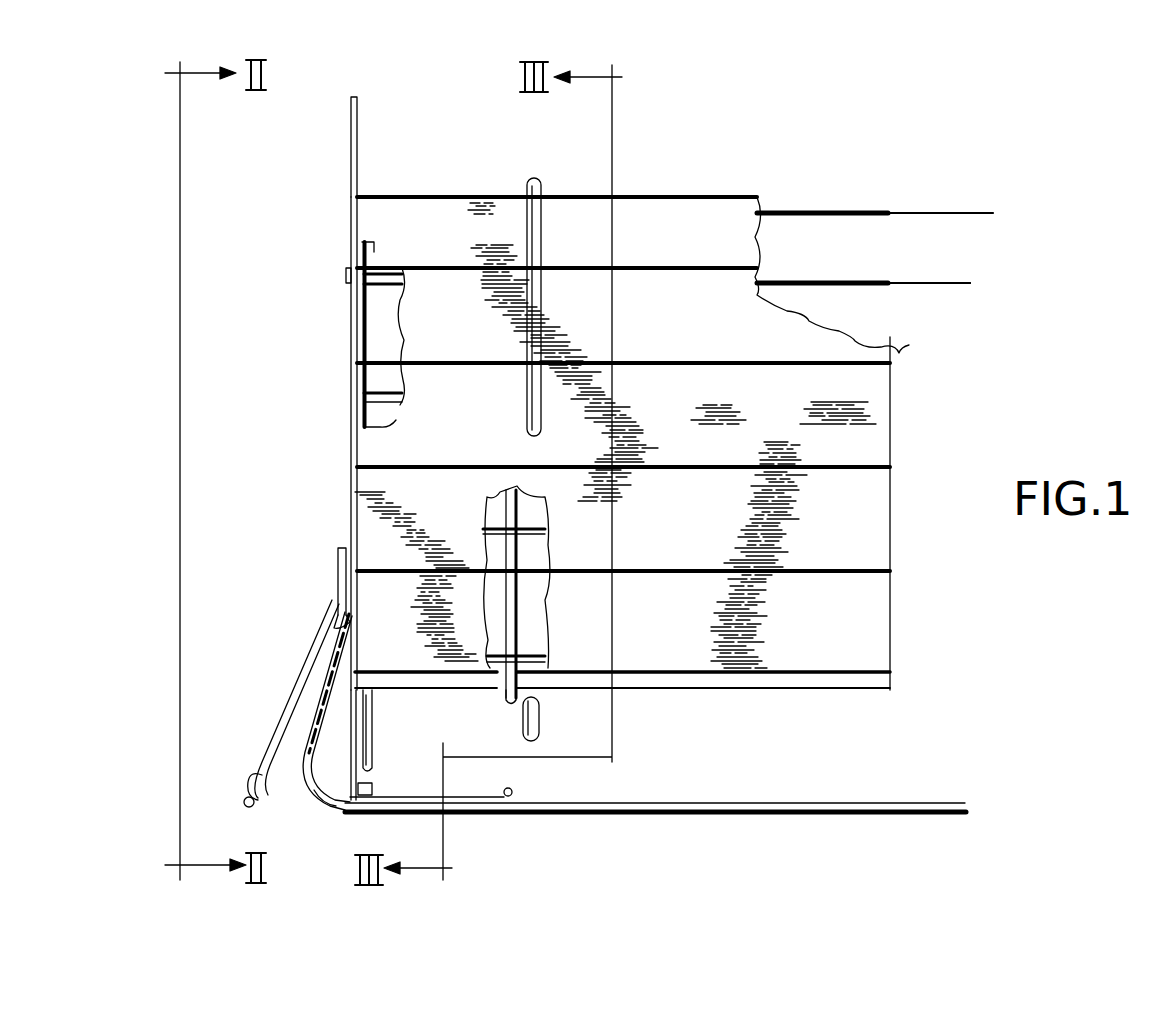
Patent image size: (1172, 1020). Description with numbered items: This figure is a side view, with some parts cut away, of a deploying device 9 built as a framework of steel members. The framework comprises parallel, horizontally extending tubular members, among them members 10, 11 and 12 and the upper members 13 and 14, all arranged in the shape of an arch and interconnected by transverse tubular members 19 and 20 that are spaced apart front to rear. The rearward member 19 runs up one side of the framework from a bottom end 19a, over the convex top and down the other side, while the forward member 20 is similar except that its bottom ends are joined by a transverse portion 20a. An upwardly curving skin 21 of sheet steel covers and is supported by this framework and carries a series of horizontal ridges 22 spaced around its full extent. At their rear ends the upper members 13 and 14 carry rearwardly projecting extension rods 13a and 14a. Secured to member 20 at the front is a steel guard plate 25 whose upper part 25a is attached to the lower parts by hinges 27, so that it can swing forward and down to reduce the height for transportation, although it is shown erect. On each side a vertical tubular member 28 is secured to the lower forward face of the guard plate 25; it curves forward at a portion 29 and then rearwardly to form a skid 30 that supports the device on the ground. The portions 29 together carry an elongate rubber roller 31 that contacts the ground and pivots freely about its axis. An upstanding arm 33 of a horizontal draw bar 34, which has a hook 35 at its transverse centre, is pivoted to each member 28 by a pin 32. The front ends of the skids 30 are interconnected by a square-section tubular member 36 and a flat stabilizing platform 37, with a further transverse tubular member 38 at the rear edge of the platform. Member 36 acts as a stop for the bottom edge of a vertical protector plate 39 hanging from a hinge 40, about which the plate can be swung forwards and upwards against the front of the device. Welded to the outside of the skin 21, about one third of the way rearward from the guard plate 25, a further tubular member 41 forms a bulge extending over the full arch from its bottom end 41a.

The deploying device 9 is at (642, 184).
The tubular member 10 is at (498, 648).
The tubular member 11 is at (490, 526).
The tubular member 12 is at (396, 390).
The upper tubular member 13 is at (830, 282).
The extension rod 13a is at (926, 284).
The upper tubular member 14 is at (838, 207).
The extension rod 14a is at (913, 209).
The rearward transverse tubular member 19 is at (520, 605).
The bottom end 19a is at (500, 698).
The forward transverse tubular member 20 is at (358, 340).
The transverse portion 20a is at (372, 764).
The skin 21 is at (867, 405).
The horizontal ridges 22 is at (658, 266).
The guard plate 25 is at (352, 459).
The upper part of guard plate 25a is at (351, 149).
The hinges 27 is at (346, 283).
The vertical tubular member 28 is at (338, 559).
The curved portion 29 is at (293, 790).
The skid 30 is at (735, 806).
The rubber roller 31 is at (323, 808).
The pin 32 is at (336, 614).
The upstanding arm 33 is at (304, 720).
The draw bar 34 is at (250, 810).
The hook 35 is at (246, 784).
The square-section tubular member 36 is at (373, 787).
The stabilizing platform 37 is at (438, 800).
The transverse tubular member 38 is at (512, 789).
The protector plate 39 is at (372, 716).
The hinge 40 is at (368, 672).
The tubular member 41 is at (541, 235).
The bottom end 41a is at (544, 714).